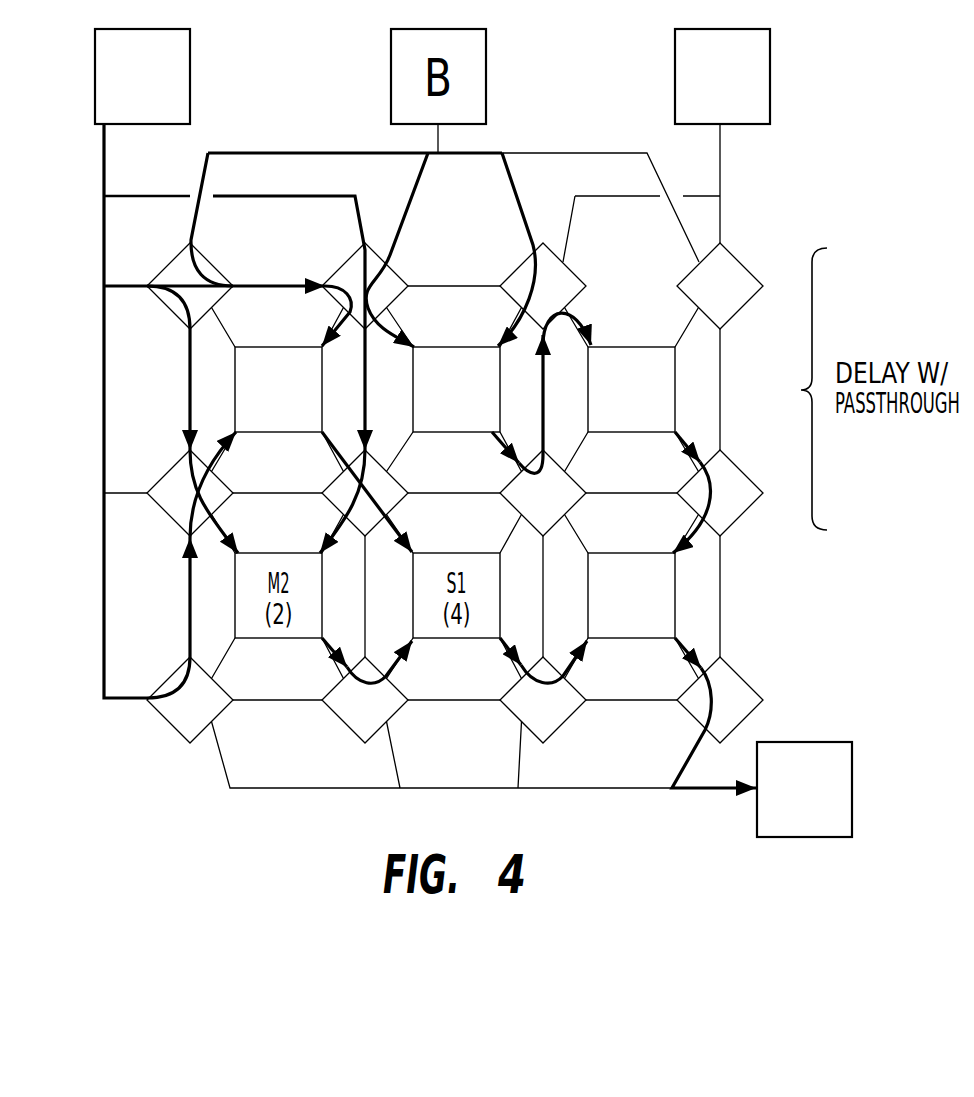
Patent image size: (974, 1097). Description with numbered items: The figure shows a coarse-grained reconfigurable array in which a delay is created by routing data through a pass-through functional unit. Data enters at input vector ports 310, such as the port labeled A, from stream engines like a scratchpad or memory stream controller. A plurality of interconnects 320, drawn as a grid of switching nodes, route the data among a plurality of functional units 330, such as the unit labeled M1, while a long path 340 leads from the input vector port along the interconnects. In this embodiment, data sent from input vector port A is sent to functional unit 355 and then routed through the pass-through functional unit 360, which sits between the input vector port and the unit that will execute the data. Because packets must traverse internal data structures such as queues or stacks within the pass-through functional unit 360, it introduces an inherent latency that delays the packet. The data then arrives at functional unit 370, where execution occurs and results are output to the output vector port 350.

The input vector port 310 is at (95, 52).
The interconnect 320 is at (171, 263).
The functional unit 330 is at (291, 347).
The long path 340 is at (104, 467).
The output vector port 350 is at (817, 742).
The functional unit 355 is at (480, 347).
The pass-through functional unit 360 is at (651, 347).
The functional unit 370 is at (652, 555).